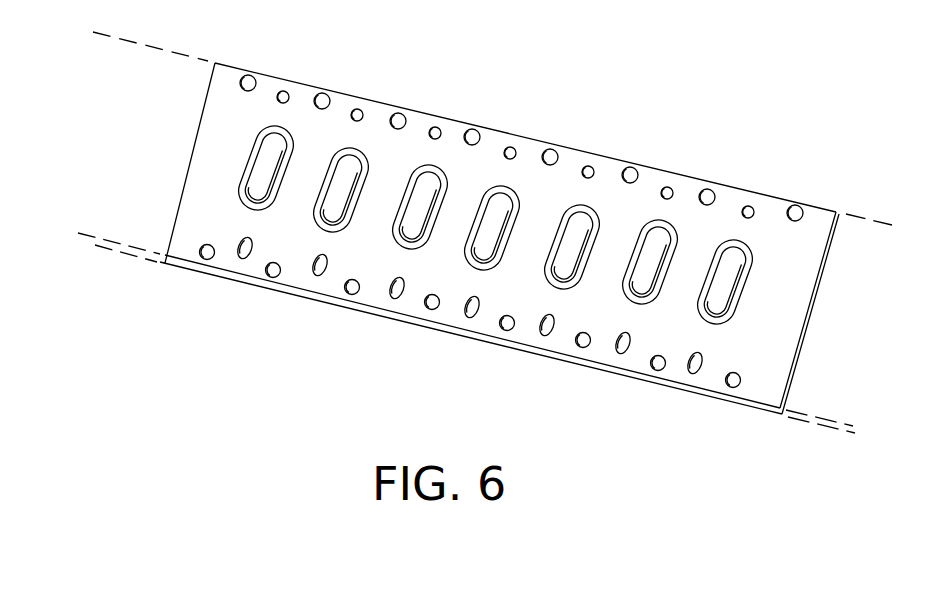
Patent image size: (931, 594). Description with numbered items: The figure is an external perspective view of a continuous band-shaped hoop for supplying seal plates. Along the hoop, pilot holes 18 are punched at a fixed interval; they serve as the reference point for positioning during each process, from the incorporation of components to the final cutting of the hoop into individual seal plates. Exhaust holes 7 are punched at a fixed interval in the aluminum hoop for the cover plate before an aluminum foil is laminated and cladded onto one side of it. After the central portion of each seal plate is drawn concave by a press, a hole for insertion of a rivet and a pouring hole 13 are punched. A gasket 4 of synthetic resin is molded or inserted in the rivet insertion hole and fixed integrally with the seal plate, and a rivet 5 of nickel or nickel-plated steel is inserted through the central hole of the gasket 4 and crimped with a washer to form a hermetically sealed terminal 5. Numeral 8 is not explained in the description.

The gasket 4 is at (359, 194).
The rivet 5 is at (350, 176).
The exhaust hole 7 is at (208, 278).
The oval hole 8 is at (238, 251).
The pouring hole 13 is at (289, 93).
The pilot hole 18 is at (249, 75).